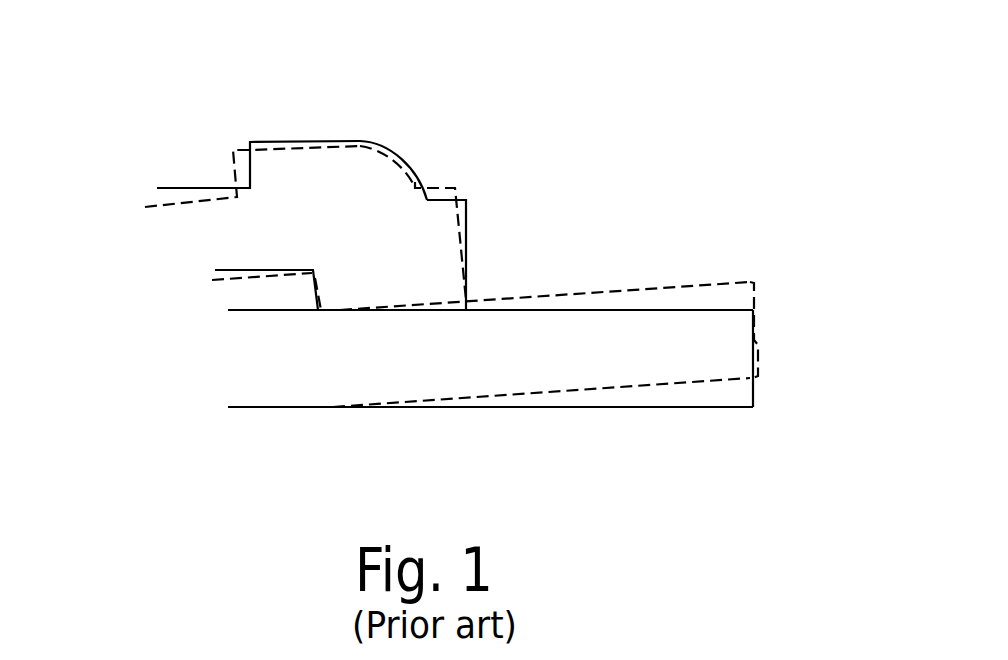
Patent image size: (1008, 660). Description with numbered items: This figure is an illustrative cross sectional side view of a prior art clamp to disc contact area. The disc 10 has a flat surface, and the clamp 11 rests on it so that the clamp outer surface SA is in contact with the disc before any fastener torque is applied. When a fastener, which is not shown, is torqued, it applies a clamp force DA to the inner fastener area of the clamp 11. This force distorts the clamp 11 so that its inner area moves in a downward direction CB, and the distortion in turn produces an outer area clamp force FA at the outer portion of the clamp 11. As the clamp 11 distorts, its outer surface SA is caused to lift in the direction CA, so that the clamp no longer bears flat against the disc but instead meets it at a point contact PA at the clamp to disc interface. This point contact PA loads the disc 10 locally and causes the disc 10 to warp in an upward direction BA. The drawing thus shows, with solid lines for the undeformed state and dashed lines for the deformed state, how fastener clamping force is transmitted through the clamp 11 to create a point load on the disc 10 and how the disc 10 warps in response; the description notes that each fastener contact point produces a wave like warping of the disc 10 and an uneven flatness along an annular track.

The disc 10 is at (657, 310).
The clamp 11 is at (472, 213).
The clamp force DA is at (172, 185).
The downward direction CB is at (69, 226).
The outer area clamp force FA is at (370, 193).
The lift direction CA is at (423, 264).
The point contact PA is at (327, 322).
The clamp outer surface SA is at (452, 312).
The upward direction BA is at (845, 392).